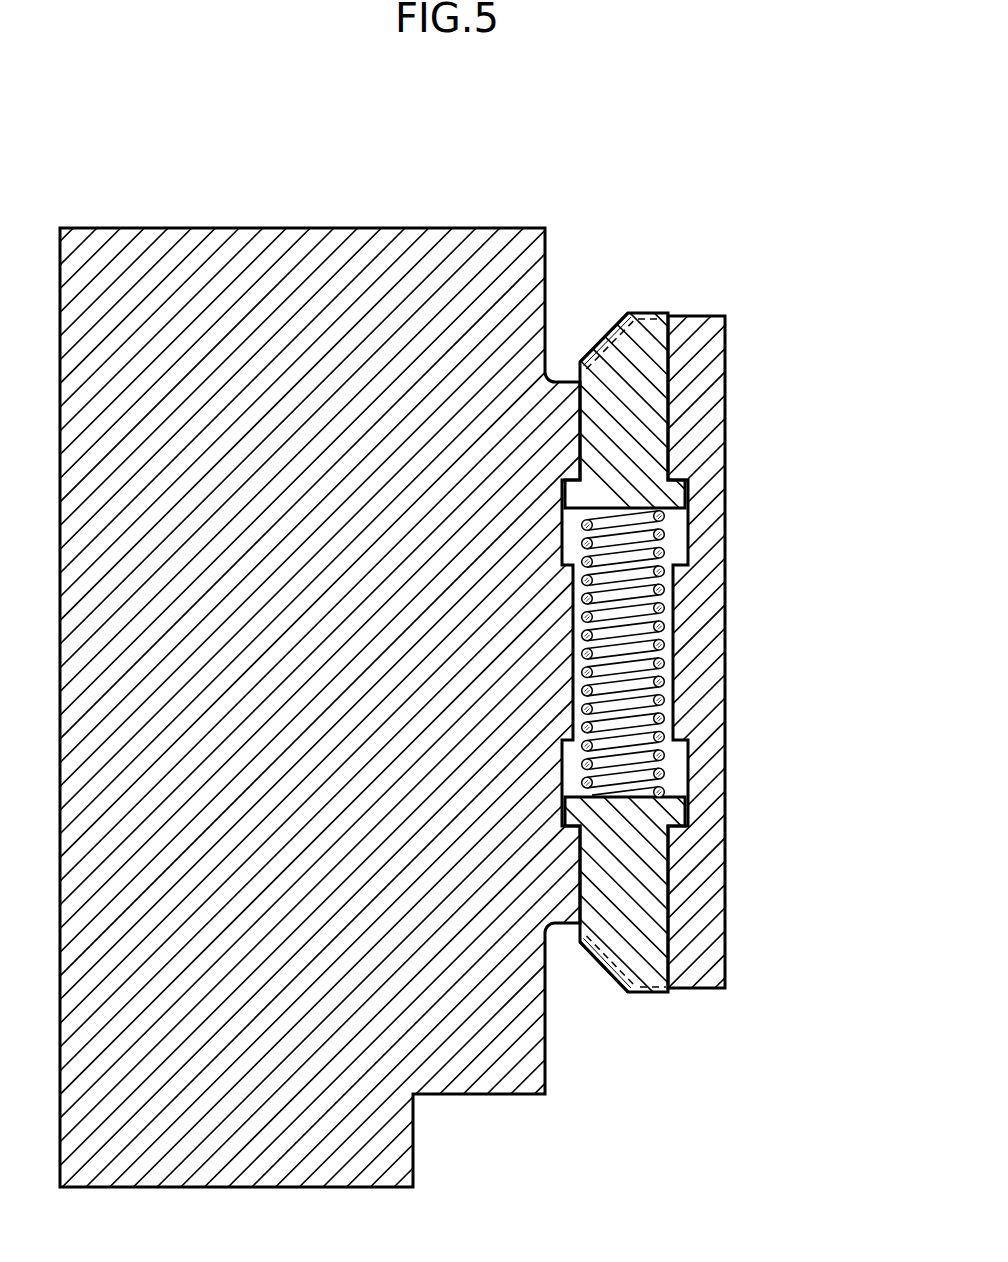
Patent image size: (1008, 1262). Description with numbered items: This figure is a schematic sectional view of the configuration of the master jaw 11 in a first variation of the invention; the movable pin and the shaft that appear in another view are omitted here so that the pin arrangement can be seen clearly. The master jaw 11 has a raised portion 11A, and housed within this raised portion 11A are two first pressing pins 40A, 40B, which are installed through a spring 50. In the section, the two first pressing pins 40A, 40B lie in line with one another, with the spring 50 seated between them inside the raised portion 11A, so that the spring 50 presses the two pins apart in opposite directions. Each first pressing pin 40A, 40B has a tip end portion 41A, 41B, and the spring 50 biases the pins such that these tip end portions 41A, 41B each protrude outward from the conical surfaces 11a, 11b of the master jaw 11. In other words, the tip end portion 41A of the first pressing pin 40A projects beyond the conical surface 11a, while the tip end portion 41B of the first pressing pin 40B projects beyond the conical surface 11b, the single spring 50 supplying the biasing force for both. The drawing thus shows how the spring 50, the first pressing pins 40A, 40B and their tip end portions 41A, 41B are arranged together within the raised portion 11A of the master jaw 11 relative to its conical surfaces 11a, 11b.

The master jaw 11 is at (493, 368).
The raised portion 11A is at (715, 347).
The conical surface 11a is at (627, 995).
The conical surface 11b is at (628, 316).
The first pressing pin 40A is at (648, 932).
The first pressing pin 40B is at (647, 375).
The tip end portion 41A is at (603, 967).
The tip end portion 41B is at (600, 347).
The spring 50 is at (663, 553).